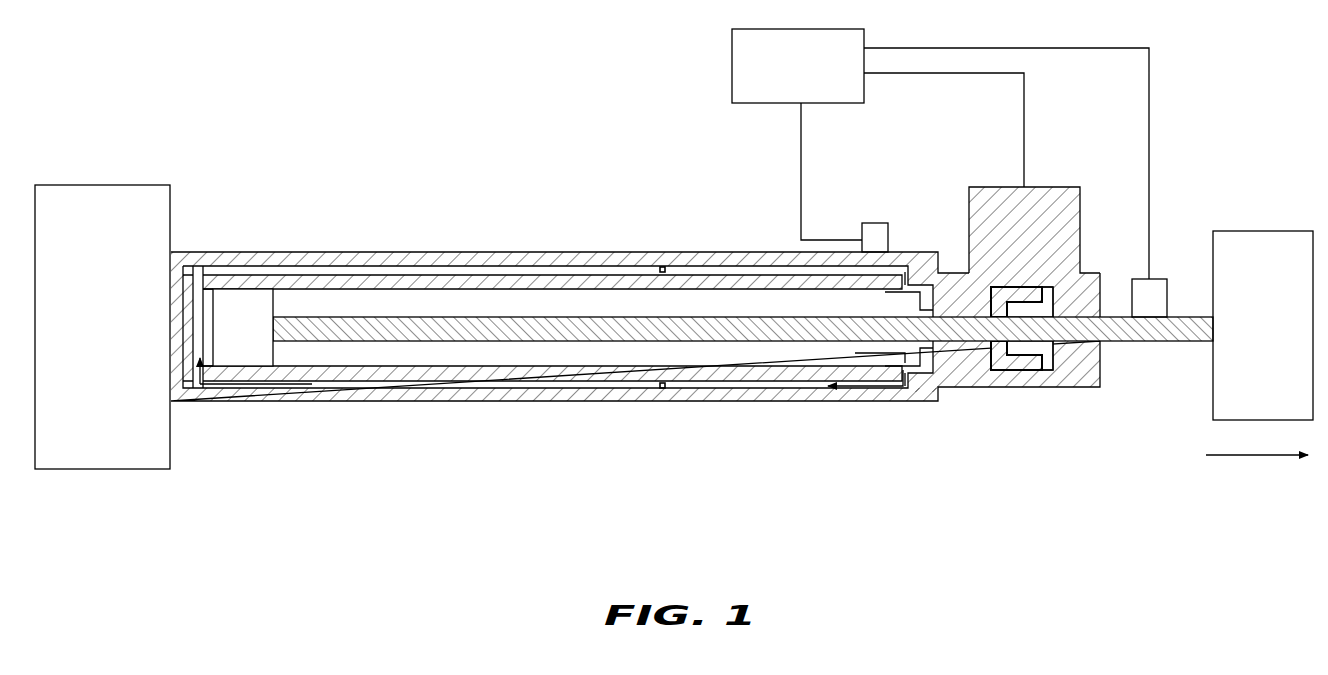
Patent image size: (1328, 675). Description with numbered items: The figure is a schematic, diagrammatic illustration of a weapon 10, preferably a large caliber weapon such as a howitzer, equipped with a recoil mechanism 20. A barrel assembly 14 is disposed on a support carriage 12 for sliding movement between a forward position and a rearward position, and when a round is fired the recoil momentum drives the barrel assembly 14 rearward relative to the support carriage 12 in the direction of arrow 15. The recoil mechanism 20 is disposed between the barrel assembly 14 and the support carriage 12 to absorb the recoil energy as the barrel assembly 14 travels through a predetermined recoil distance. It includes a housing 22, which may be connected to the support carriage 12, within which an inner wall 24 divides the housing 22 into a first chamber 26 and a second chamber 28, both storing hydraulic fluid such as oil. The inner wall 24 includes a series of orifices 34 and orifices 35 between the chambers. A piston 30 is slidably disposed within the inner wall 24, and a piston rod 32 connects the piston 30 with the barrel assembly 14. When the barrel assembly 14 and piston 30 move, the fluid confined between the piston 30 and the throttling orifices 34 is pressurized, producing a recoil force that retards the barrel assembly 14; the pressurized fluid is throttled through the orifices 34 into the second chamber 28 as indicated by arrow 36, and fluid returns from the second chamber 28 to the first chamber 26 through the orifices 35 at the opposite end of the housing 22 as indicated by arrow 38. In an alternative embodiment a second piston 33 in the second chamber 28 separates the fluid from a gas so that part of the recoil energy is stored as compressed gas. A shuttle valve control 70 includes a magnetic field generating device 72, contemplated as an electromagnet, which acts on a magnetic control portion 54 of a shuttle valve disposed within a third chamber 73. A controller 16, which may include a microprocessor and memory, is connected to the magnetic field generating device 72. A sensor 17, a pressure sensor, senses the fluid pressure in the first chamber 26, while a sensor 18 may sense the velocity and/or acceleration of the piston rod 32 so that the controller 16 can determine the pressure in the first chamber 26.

The weapon 10 is at (394, 108).
The support carriage 12 is at (85, 341).
The barrel assembly 14 is at (1248, 314).
The arrow 15 is at (1232, 456).
The controller 16 is at (785, 77).
The sensor 17 is at (877, 232).
The sensor 18 is at (1153, 290).
The recoil mechanism 20 is at (758, 437).
The housing 22 is at (263, 252).
The inner wall 24 is at (380, 282).
The first chamber 26 is at (747, 310).
The second chamber 28 is at (206, 270).
The piston 30 is at (228, 339).
The piston rod 32 is at (535, 330).
The second piston 33 is at (660, 388).
The orifices 34 is at (906, 278).
The orifices 35 is at (199, 262).
The arrow 36 is at (857, 388).
The arrow 38 is at (293, 385).
The control portion 54 is at (1007, 360).
The shuttle valve control 70 is at (1090, 154).
The magnetic field generating device 72 is at (968, 193).
The third chamber 73 is at (1048, 358).